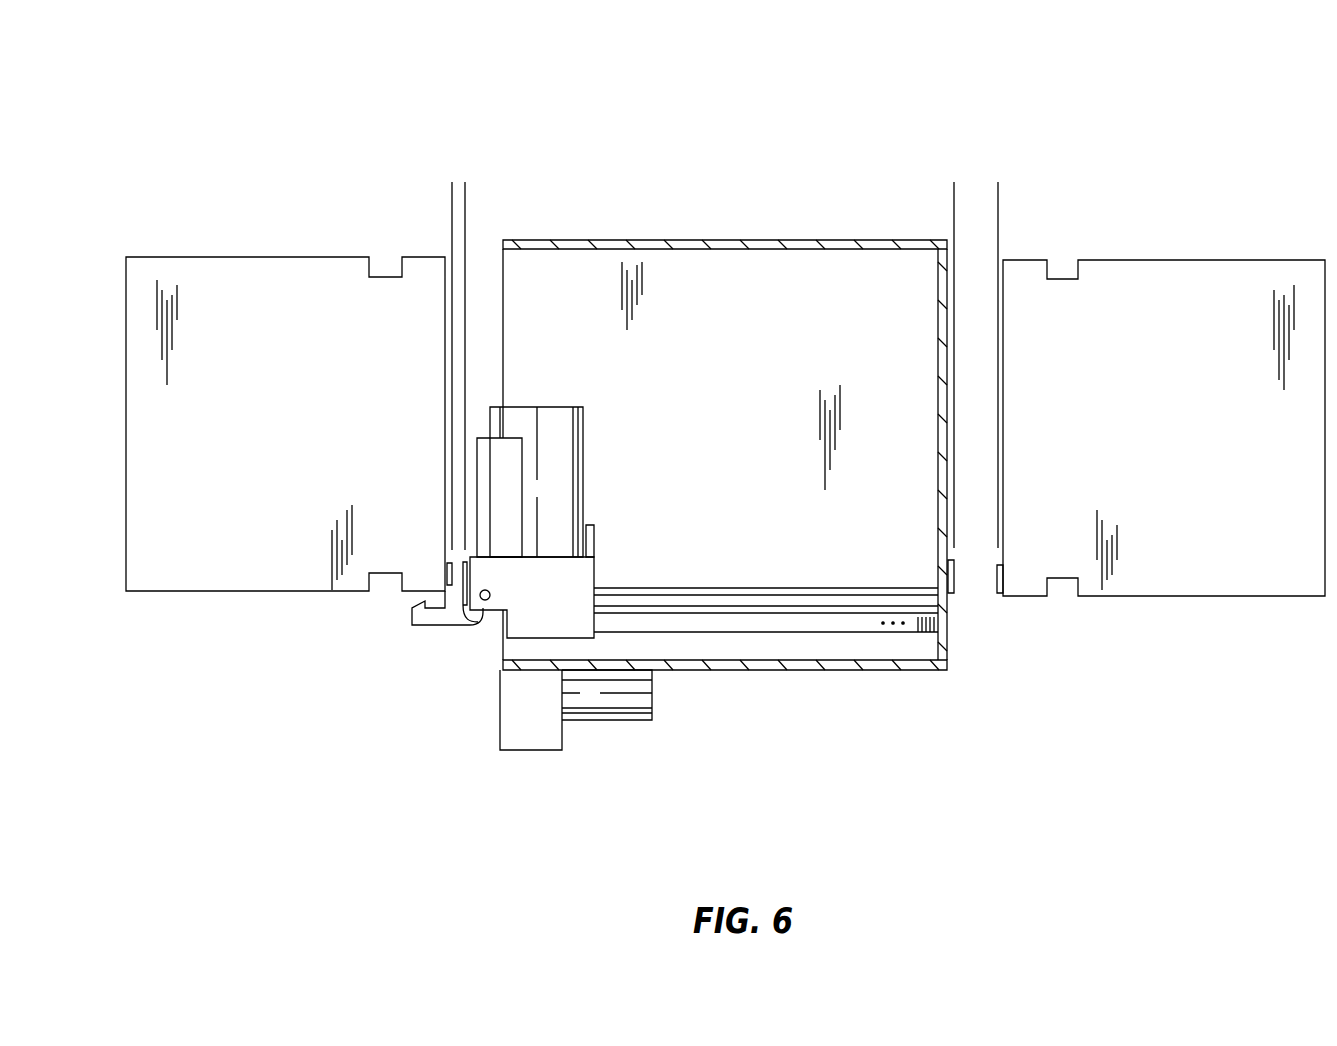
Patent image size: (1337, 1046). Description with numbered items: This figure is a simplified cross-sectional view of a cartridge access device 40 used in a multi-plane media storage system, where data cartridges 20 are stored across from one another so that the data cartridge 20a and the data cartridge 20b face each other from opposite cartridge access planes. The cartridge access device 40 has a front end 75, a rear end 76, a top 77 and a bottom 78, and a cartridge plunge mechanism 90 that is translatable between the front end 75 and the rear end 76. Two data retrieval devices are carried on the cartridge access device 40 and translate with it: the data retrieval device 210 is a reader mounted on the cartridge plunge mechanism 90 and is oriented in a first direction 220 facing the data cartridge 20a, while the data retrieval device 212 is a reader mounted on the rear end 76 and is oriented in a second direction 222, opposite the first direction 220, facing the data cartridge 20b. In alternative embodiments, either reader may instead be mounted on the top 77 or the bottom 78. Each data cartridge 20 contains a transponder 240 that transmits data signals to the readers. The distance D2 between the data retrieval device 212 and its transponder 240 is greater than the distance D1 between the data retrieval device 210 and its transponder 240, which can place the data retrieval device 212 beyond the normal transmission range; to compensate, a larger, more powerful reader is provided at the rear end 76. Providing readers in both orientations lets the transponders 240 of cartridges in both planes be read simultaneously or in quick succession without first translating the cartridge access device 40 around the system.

The data cartridge 20 is at (725, 402).
The data cartridge 20a is at (280, 254).
The data cartridge 20b is at (1173, 256).
The cartridge access device 40 is at (723, 456).
The front end 75 is at (503, 309).
The rear end 76 is at (948, 333).
The top 77 is at (640, 240).
The bottom 78 is at (790, 672).
The cartridge plunge mechanism 90 is at (558, 396).
The data retrieval device 210 is at (462, 612).
The data retrieval device 212 is at (953, 583).
The first direction 220 is at (476, 75).
The second direction 222 is at (958, 78).
The transponder 240 is at (446, 600).
The distance D1 is at (475, 197).
The distance D2 is at (1008, 197).